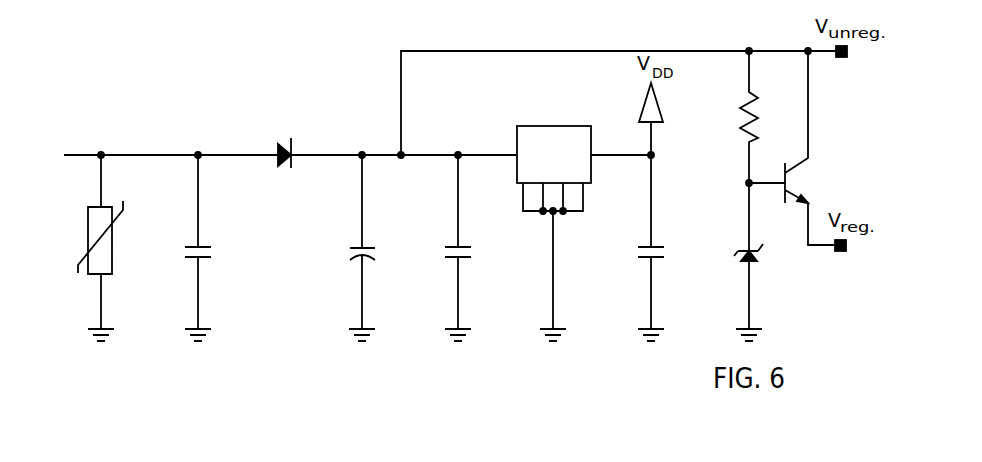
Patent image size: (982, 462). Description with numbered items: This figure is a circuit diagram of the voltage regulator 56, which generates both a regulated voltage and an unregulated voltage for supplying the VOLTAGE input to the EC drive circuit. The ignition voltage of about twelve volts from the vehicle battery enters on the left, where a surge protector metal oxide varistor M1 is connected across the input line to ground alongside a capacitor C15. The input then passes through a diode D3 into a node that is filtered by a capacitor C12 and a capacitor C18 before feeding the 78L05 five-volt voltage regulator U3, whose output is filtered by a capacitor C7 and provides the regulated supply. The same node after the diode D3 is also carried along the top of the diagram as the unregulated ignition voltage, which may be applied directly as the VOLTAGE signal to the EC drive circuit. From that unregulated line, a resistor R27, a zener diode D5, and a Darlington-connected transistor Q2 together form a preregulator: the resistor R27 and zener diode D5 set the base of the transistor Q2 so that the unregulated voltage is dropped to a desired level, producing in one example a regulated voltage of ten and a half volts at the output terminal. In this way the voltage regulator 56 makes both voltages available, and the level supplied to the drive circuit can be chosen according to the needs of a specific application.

The voltage regulator 56 is at (190, 80).
The surge protector metal oxide varistor M1 is at (111, 242).
The capacitor C15 is at (216, 242).
The diode D3 is at (288, 139).
The capacitor C12 is at (379, 242).
The capacitor C18 is at (476, 242).
The 78L05 voltage regulator U3 is at (554, 227).
The capacitor C7 is at (664, 242).
The resistor R27 is at (768, 117).
The Darlington-connected transistor Q2 is at (791, 148).
The zener diode D5 is at (759, 256).